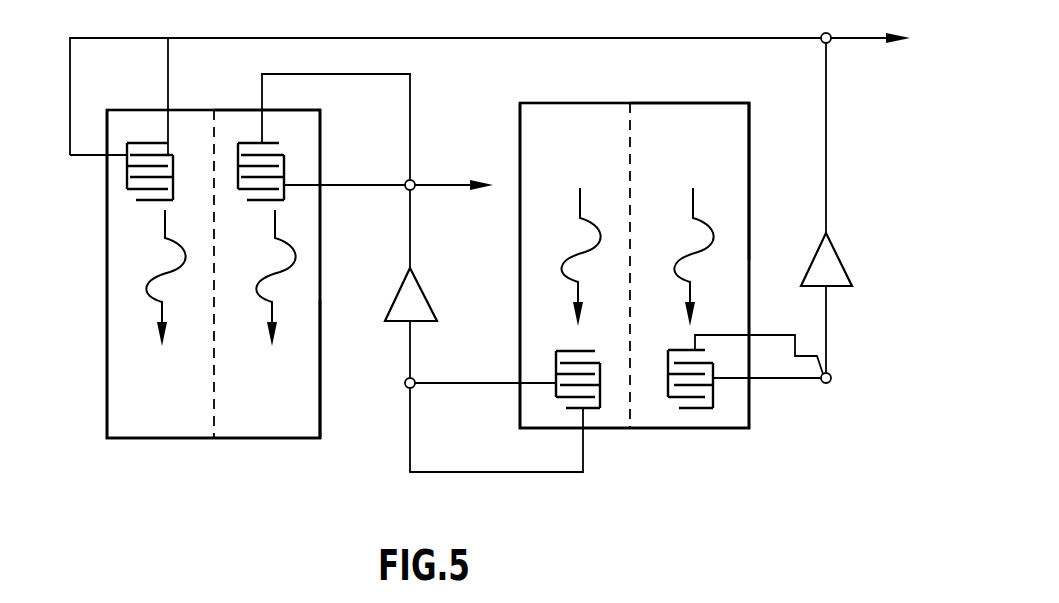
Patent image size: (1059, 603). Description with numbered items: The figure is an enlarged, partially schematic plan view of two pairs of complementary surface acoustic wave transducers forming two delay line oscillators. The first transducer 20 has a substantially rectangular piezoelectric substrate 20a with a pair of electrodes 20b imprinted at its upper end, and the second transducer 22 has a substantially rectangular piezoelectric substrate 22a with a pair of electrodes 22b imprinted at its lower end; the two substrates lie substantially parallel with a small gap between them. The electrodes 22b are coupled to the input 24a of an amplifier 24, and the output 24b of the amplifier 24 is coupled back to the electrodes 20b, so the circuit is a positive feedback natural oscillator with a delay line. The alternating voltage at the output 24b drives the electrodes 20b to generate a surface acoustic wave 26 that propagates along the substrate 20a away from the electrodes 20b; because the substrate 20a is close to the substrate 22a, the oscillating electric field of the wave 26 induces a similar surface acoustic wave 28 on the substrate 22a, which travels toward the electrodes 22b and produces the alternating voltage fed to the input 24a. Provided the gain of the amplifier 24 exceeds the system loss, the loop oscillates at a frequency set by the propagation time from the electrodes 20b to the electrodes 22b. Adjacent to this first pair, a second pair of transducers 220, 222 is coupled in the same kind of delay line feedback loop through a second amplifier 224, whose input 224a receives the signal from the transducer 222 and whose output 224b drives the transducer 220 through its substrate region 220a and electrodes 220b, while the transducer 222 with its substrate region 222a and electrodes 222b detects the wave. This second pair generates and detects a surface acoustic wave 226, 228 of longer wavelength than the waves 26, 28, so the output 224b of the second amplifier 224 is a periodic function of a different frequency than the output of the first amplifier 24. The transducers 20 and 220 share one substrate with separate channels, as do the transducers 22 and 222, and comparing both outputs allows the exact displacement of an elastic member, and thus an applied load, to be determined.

The first transducer 20 is at (130, 439).
The piezoelectric substrate 20a is at (124, 378).
The electrodes 20b is at (127, 172).
The surface acoustic wave 26 is at (143, 278).
The transducer 220 is at (232, 439).
The second section region 220a is at (310, 376).
The output interdigital transducer of second section 220b is at (284, 166).
The surface acoustic wave 226 is at (276, 240).
The output 224b is at (414, 180).
The second amplifier 224 is at (425, 295).
The input node of first amplifier 224a is at (416, 378).
The transducer 222 is at (598, 430).
The third section region 222a is at (530, 135).
The interdigital transducer of third section 222b is at (557, 403).
The surface acoustic wave 228 is at (575, 253).
The surface acoustic wave 28 is at (700, 218).
The second transducer 22 is at (693, 430).
The piezoelectric substrate 22a is at (733, 152).
The electrodes 22b is at (715, 398).
The amplifier 24 is at (840, 250).
The input 24a is at (830, 372).
The output 24b is at (830, 33).